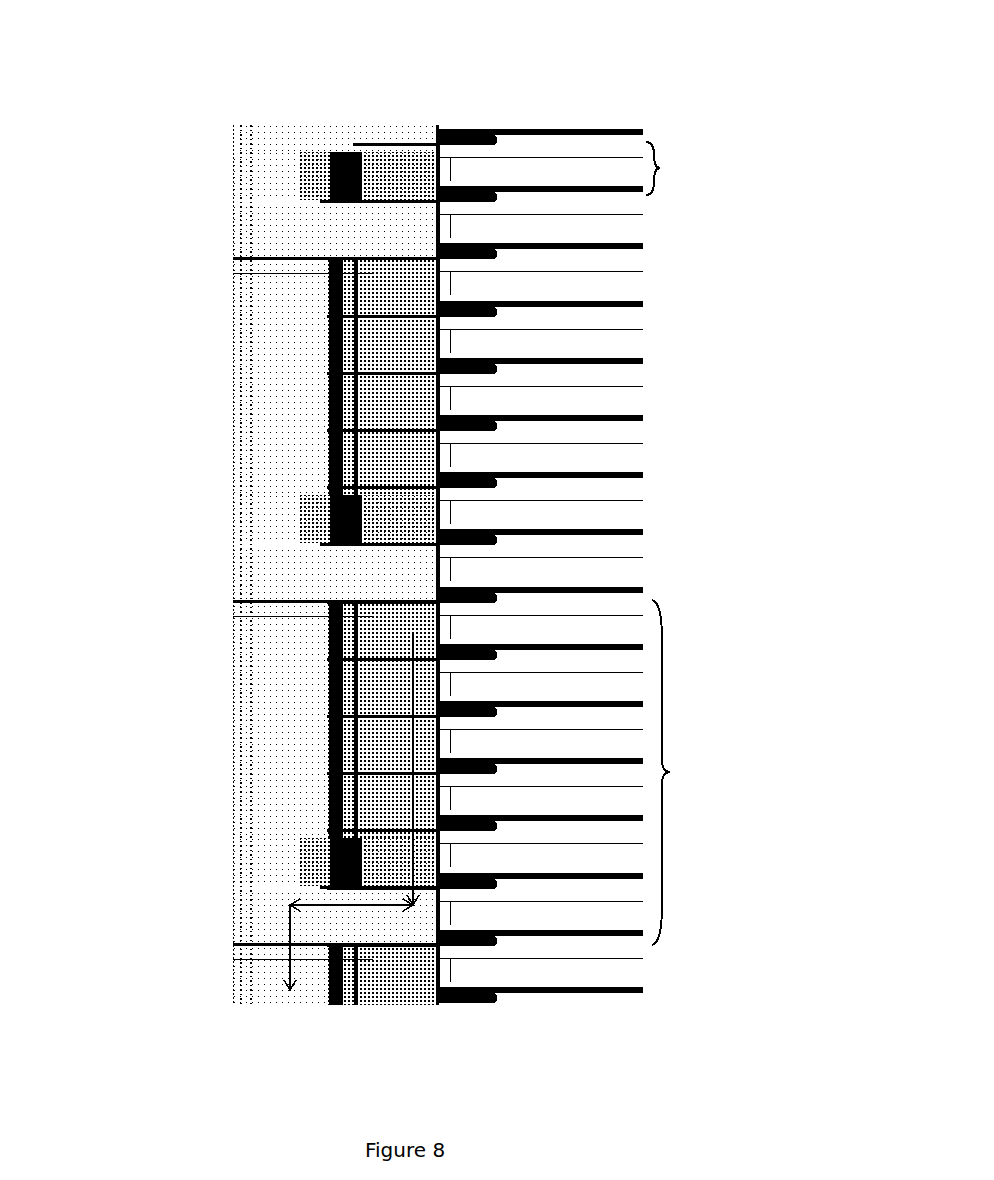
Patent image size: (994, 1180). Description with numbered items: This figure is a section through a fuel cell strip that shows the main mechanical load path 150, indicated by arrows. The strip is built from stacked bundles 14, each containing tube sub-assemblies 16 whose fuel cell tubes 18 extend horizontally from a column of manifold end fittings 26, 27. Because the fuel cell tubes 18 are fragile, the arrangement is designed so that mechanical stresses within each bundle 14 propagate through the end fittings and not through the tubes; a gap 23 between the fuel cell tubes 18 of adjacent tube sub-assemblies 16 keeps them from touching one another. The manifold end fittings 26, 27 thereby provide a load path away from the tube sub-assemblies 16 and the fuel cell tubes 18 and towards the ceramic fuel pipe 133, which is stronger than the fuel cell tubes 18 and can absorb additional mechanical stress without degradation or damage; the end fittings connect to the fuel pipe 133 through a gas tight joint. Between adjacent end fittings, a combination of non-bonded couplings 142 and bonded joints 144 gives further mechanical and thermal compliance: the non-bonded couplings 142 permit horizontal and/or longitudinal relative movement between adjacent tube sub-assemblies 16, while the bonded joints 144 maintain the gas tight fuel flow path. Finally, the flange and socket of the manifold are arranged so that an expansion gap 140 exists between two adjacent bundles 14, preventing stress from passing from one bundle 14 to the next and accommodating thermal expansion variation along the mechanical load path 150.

The bundle 14 is at (692, 772).
The tube sub-assembly 16 is at (678, 168).
The fuel cell tube 18 is at (545, 175).
The gap 23 is at (626, 432).
The manifold end fitting 26 is at (233, 195).
The manifold end fitting 27 is at (385, 290).
The fuel pipe 133 is at (268, 730).
The expansion gap 140 is at (418, 606).
The non-bonded coupling 142 is at (427, 774).
The bonded joint 144 is at (427, 831).
The mechanical load path 150 is at (290, 958).